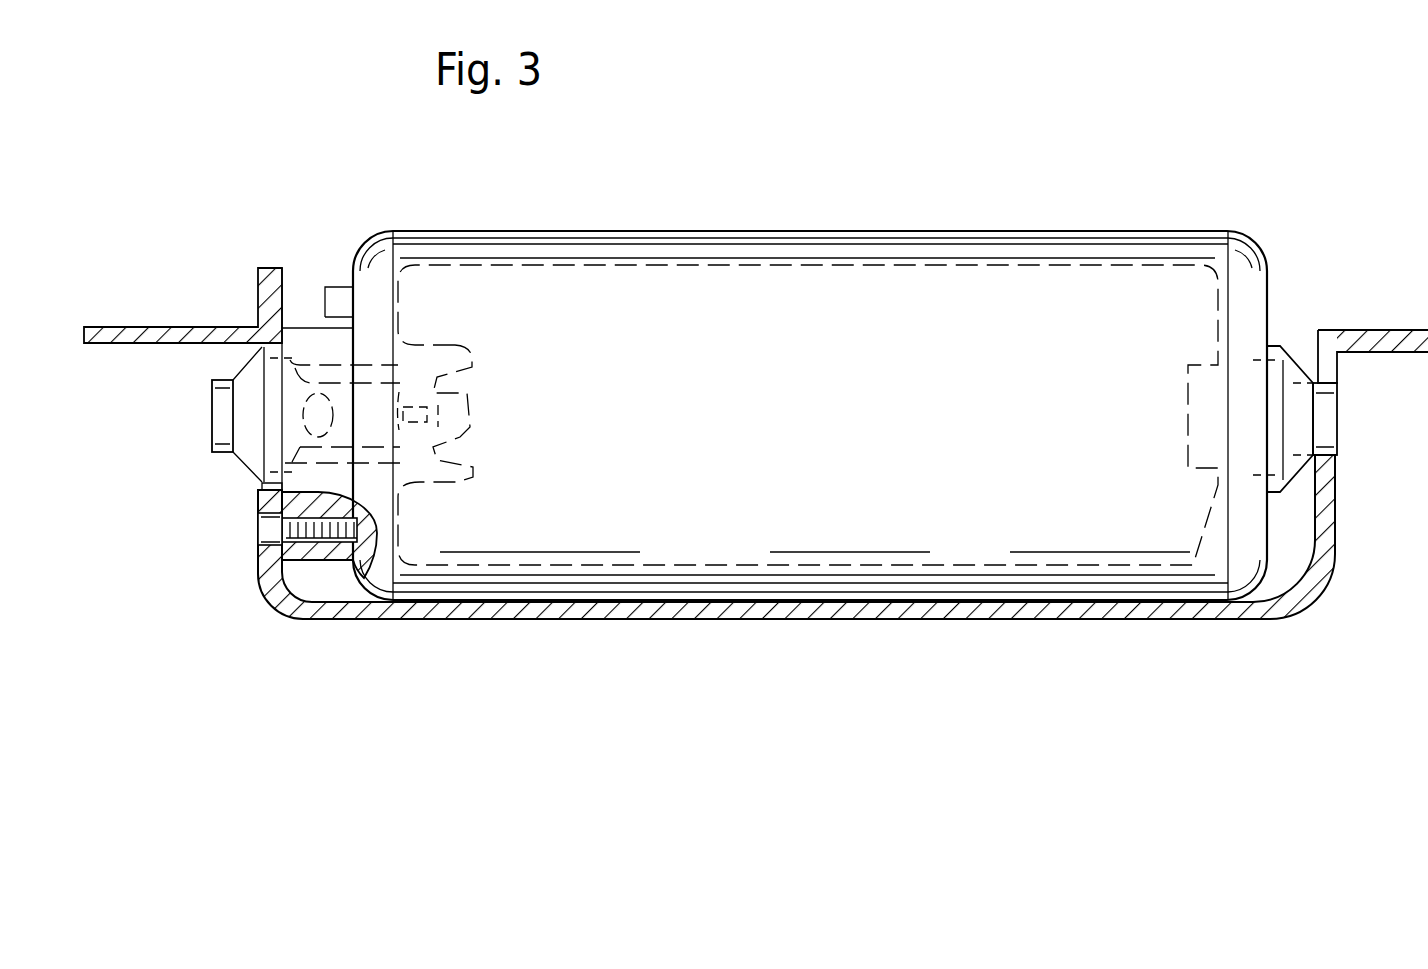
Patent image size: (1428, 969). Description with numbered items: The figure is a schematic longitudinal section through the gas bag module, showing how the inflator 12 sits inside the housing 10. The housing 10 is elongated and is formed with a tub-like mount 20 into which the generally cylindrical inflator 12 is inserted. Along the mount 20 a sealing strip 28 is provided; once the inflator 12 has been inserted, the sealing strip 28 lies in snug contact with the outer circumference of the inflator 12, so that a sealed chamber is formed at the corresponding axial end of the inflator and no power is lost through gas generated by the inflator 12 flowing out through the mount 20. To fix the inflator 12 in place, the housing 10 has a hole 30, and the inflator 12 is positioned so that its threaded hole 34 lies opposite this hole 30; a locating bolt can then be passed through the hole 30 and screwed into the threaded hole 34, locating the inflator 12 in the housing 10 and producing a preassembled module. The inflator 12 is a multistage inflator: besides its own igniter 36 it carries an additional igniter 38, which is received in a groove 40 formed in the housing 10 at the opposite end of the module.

The housing 10 is at (545, 630).
The inflator 12 is at (952, 250).
The tub-like mount 20 is at (320, 606).
The sealing strip 28 is at (1124, 613).
The hole 30 is at (260, 521).
The threaded hole 34 is at (262, 535).
The igniter 36 is at (222, 422).
The additional igniter 38 is at (1275, 380).
The groove 40 is at (1325, 362).